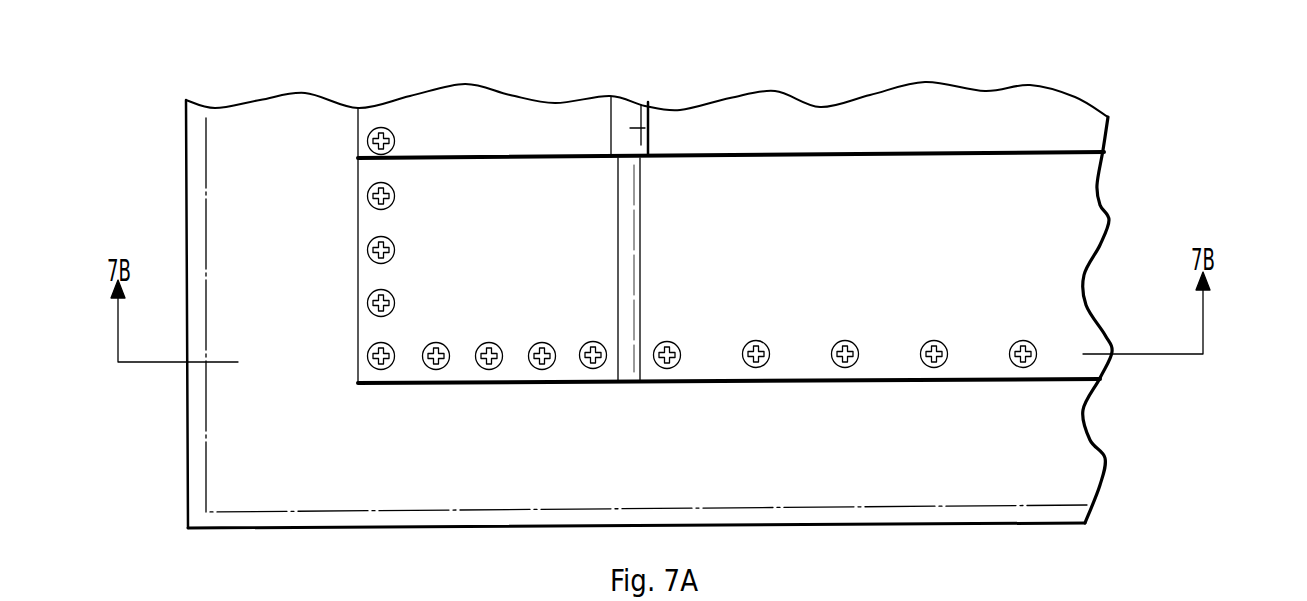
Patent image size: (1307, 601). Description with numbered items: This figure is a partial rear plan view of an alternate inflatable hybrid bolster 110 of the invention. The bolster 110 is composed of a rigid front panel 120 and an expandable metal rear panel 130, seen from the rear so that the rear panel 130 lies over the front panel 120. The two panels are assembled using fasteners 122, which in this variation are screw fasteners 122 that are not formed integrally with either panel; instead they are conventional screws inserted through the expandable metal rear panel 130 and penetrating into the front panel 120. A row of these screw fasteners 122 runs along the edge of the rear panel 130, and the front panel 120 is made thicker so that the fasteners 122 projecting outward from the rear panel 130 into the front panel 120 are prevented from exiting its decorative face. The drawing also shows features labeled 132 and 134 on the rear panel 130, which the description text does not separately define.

The inflatable hybrid bolster 110 is at (1155, 148).
The rigid front panel 120 is at (233, 497).
The screw fasteners 122 is at (542, 370).
The expandable metal rear panel 130 is at (410, 362).
The upper edge of plate 132 is at (476, 156).
The seam 134 is at (637, 129).